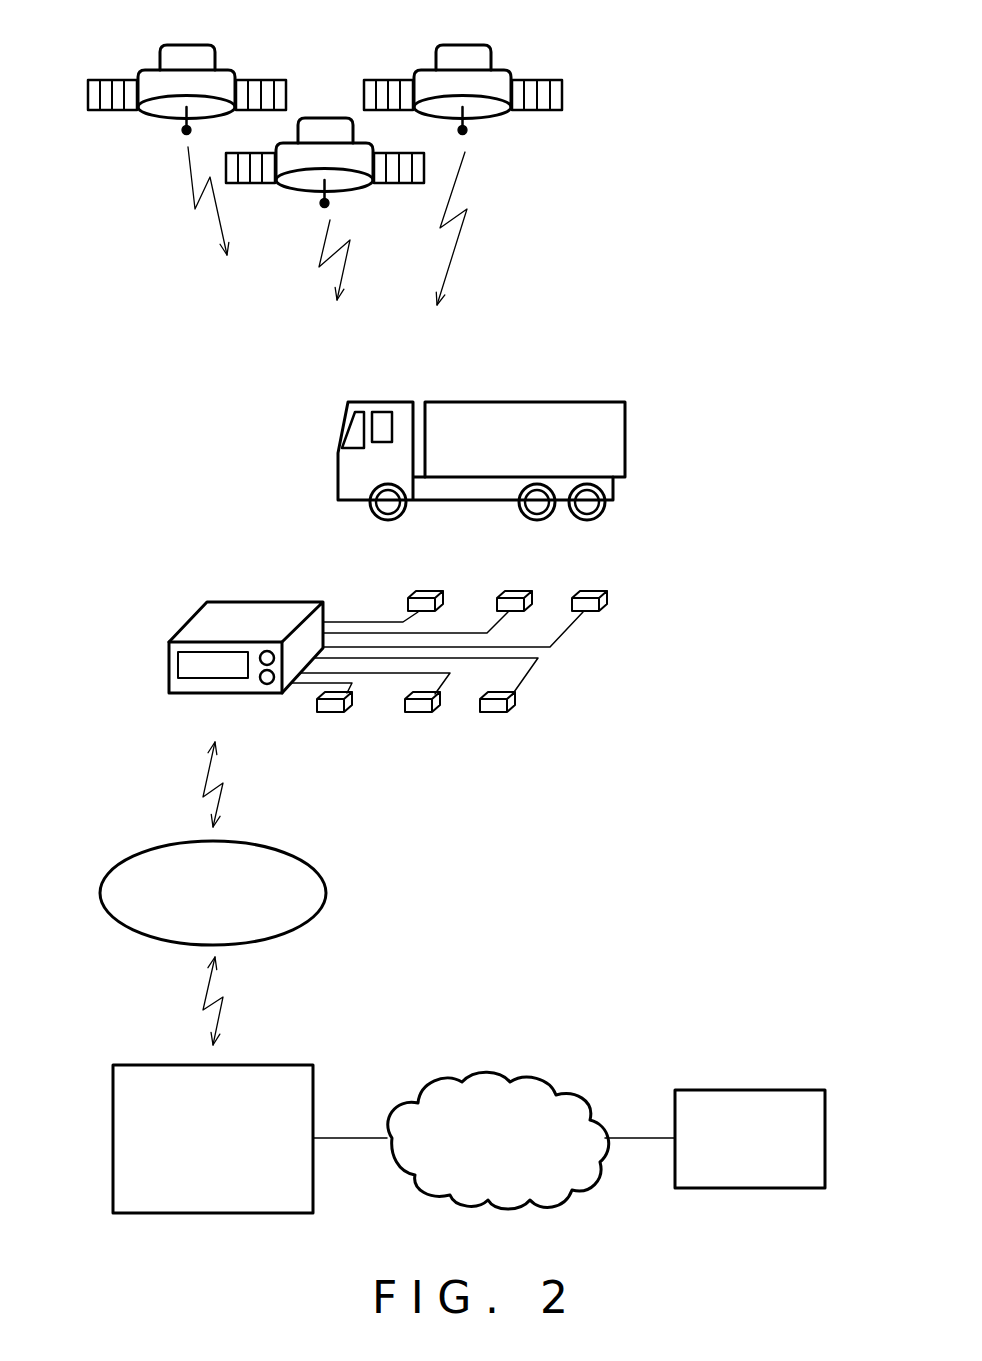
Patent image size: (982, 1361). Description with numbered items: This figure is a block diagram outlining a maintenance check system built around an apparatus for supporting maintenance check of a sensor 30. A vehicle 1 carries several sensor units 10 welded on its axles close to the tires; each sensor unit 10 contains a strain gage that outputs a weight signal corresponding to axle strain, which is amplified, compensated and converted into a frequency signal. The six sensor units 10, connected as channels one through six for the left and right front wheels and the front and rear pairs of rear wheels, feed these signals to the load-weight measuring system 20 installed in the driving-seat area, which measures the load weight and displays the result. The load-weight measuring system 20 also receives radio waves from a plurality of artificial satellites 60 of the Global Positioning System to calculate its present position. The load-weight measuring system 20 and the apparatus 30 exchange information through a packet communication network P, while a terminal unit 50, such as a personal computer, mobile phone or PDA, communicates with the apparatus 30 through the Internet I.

The artificial satellite 60 is at (153, 53).
The vehicle 1 is at (510, 388).
The load-weight measuring system 20 is at (251, 602).
The sensor unit 10 is at (408, 612).
The packet communication network P is at (288, 850).
The apparatus for supporting maintenance check of a sensor 30 is at (250, 1063).
The Internet I is at (542, 1083).
The terminal unit 50 is at (762, 1090).